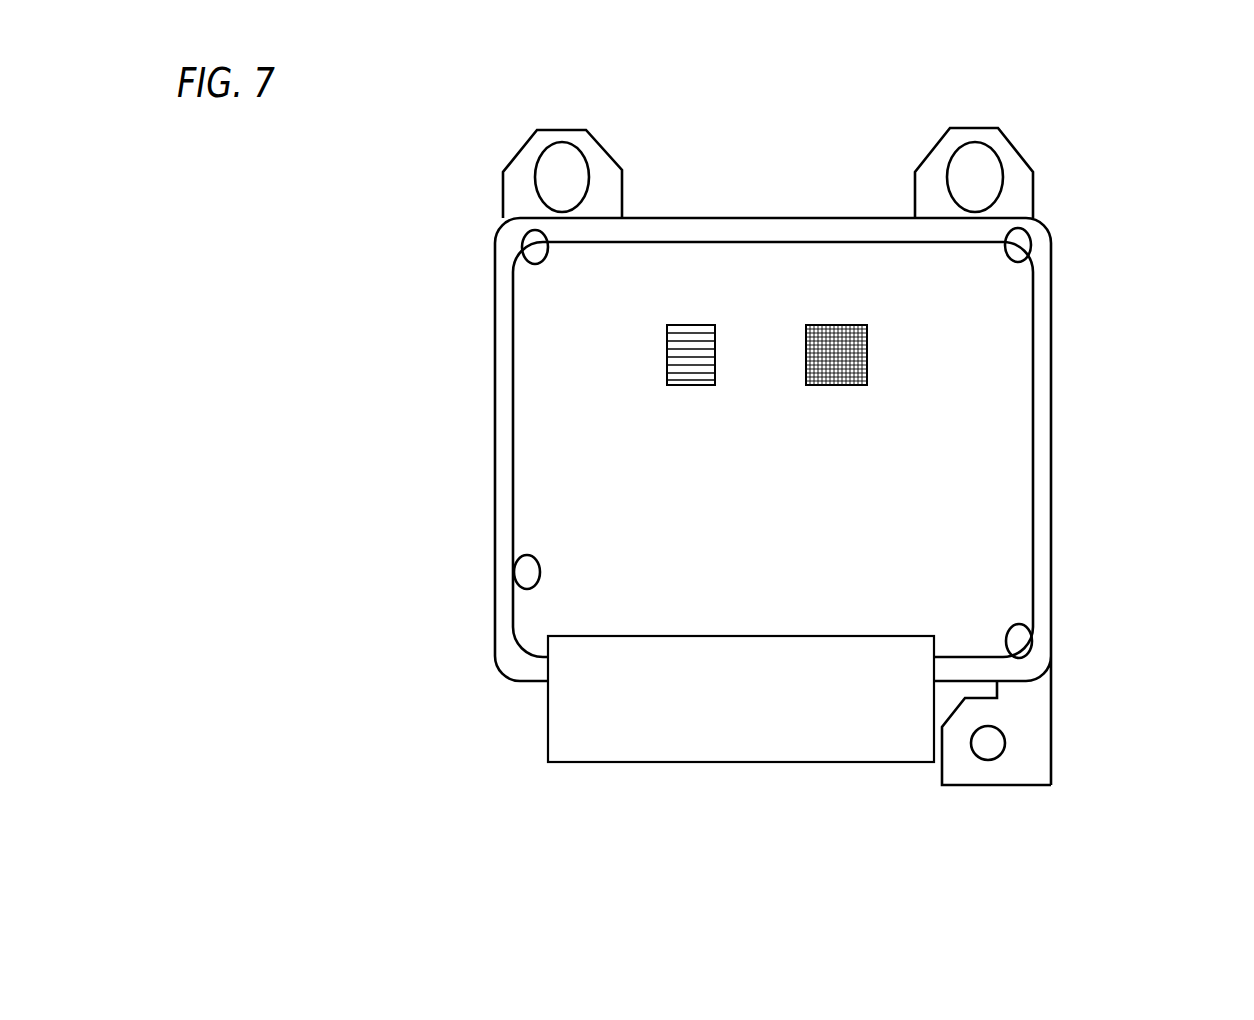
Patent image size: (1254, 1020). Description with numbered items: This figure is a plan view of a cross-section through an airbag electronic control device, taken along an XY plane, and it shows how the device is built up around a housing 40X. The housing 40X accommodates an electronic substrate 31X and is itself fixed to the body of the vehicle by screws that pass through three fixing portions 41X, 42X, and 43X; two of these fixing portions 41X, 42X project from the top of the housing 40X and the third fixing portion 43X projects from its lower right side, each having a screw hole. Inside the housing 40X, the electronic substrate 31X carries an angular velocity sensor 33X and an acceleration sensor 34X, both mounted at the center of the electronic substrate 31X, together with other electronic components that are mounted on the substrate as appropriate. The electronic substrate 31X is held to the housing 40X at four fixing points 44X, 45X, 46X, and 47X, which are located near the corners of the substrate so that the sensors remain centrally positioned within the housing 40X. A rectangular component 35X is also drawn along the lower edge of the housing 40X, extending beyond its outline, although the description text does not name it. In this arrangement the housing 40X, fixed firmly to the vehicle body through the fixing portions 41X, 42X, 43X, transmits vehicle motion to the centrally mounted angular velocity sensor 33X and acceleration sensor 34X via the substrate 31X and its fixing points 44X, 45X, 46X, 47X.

The electronic substrate 31X is at (588, 479).
The angular velocity sensor 33X is at (680, 350).
The acceleration sensor 34X is at (857, 348).
The connector 35X is at (865, 686).
The housing 40X is at (1052, 442).
The fixing portion 41X is at (563, 177).
The fixing portion 42X is at (980, 177).
The fixing portion 43X is at (988, 745).
The fixing point 44X is at (532, 247).
The fixing point 45X is at (1018, 245).
The fixing point 46X is at (1019, 641).
The fixing point 47X is at (528, 570).